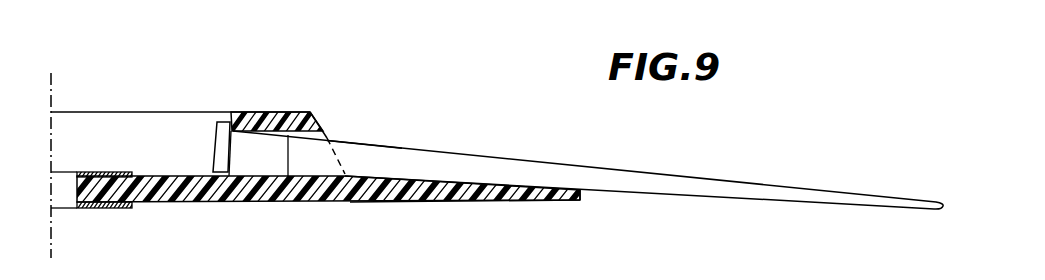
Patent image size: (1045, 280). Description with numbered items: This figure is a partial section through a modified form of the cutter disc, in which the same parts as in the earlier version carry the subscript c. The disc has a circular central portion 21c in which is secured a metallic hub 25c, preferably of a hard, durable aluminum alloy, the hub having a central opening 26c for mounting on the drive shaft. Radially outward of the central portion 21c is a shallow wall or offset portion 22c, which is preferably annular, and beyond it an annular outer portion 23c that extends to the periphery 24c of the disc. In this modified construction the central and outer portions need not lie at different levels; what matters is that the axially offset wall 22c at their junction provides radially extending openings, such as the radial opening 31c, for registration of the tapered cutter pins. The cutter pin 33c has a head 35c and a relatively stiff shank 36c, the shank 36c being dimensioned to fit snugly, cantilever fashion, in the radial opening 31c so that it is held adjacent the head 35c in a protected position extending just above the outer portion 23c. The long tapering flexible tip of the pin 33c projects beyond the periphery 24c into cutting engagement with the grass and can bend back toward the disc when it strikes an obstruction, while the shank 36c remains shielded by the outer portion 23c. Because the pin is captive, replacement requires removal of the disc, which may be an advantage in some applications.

The circular central portion 21c is at (156, 202).
The shallow wall or offset portion 22c is at (254, 112).
The annular outer portion 23c is at (448, 201).
The periphery 24c is at (582, 198).
The metallic hub 25c is at (114, 172).
The central opening 26c is at (80, 185).
The radial opening or socket 31c is at (281, 174).
The cutter pin 33c is at (702, 169).
The head 35c is at (218, 138).
The shank 36c is at (402, 133).